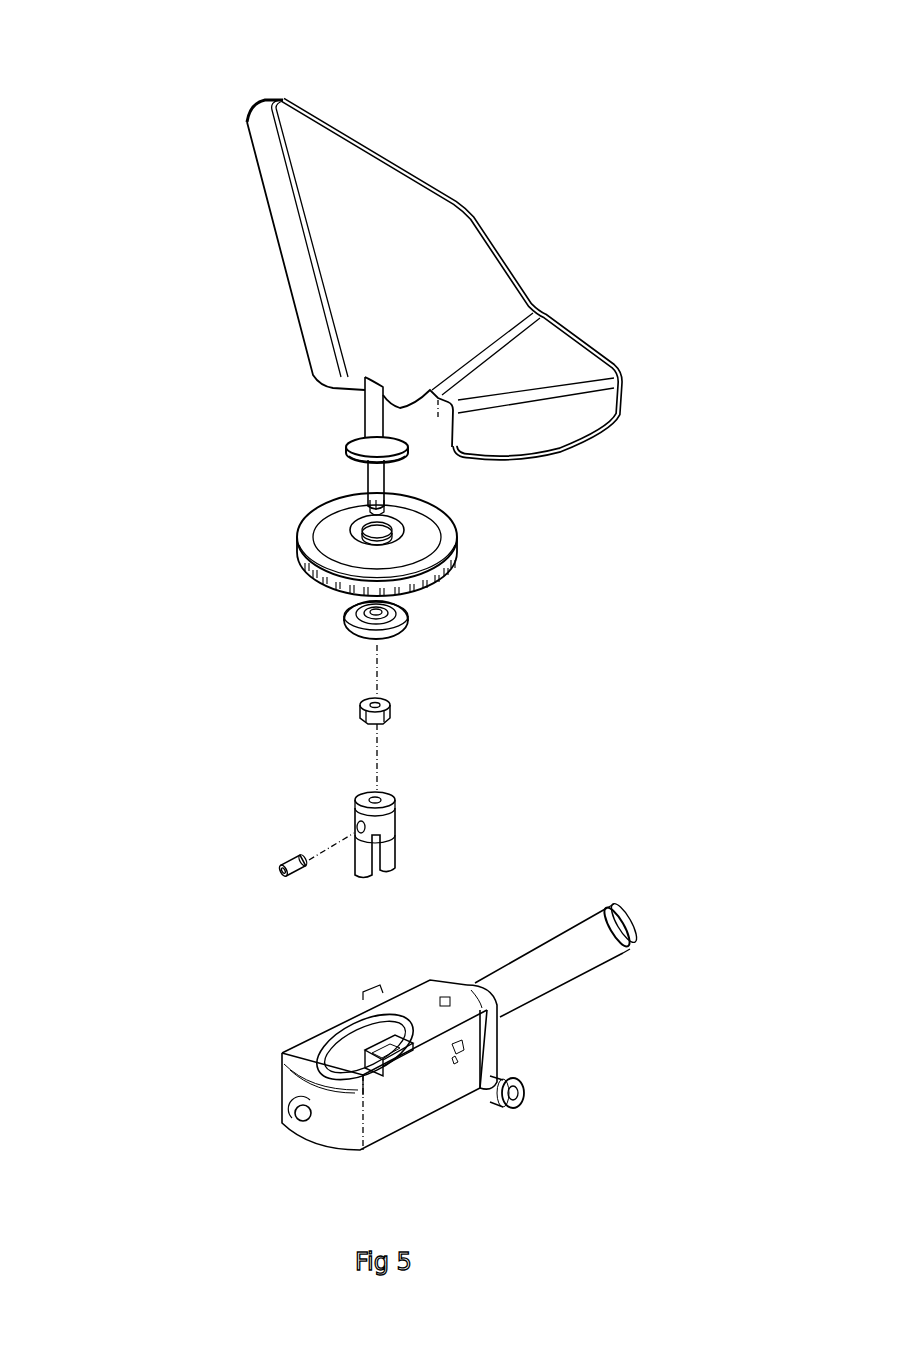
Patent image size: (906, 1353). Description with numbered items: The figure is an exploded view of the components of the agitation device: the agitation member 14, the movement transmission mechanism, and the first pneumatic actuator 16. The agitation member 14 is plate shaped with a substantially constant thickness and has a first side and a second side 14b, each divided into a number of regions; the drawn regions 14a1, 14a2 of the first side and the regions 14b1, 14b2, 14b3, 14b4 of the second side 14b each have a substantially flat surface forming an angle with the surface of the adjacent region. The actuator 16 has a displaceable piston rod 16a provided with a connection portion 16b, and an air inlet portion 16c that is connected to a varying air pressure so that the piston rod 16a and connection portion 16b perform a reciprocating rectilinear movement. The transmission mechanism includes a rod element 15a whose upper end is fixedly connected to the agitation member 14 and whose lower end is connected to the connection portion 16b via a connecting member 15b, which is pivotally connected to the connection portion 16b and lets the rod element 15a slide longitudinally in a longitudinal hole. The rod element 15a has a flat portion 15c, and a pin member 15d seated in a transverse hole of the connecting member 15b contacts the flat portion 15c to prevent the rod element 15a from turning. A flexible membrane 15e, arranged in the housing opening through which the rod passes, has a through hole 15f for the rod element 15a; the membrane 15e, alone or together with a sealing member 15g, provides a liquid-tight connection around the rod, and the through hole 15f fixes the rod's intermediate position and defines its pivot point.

The agitation member 14 is at (402, 267).
The region of first side 14a1 is at (370, 270).
The region of first side 14a2 is at (271, 193).
The second side 14b is at (492, 231).
The region of second side 14b1 is at (398, 165).
The region of second side 14b2 is at (265, 96).
The region of second side 14b3 is at (582, 340).
The region of second side 14b4 is at (621, 410).
The rod element 15a is at (372, 398).
The connecting member 15b is at (383, 825).
The flat portion 15c is at (370, 500).
The pin member 15d is at (287, 858).
The flexible membrane 15e is at (326, 519).
The through hole 15f is at (396, 529).
The sealing member 15g is at (348, 452).
The first pneumatic actuator 16 is at (422, 1027).
The piston rod 16a is at (588, 945).
The connection portion 16b is at (390, 1057).
The air inlet portion 16c is at (526, 1094).